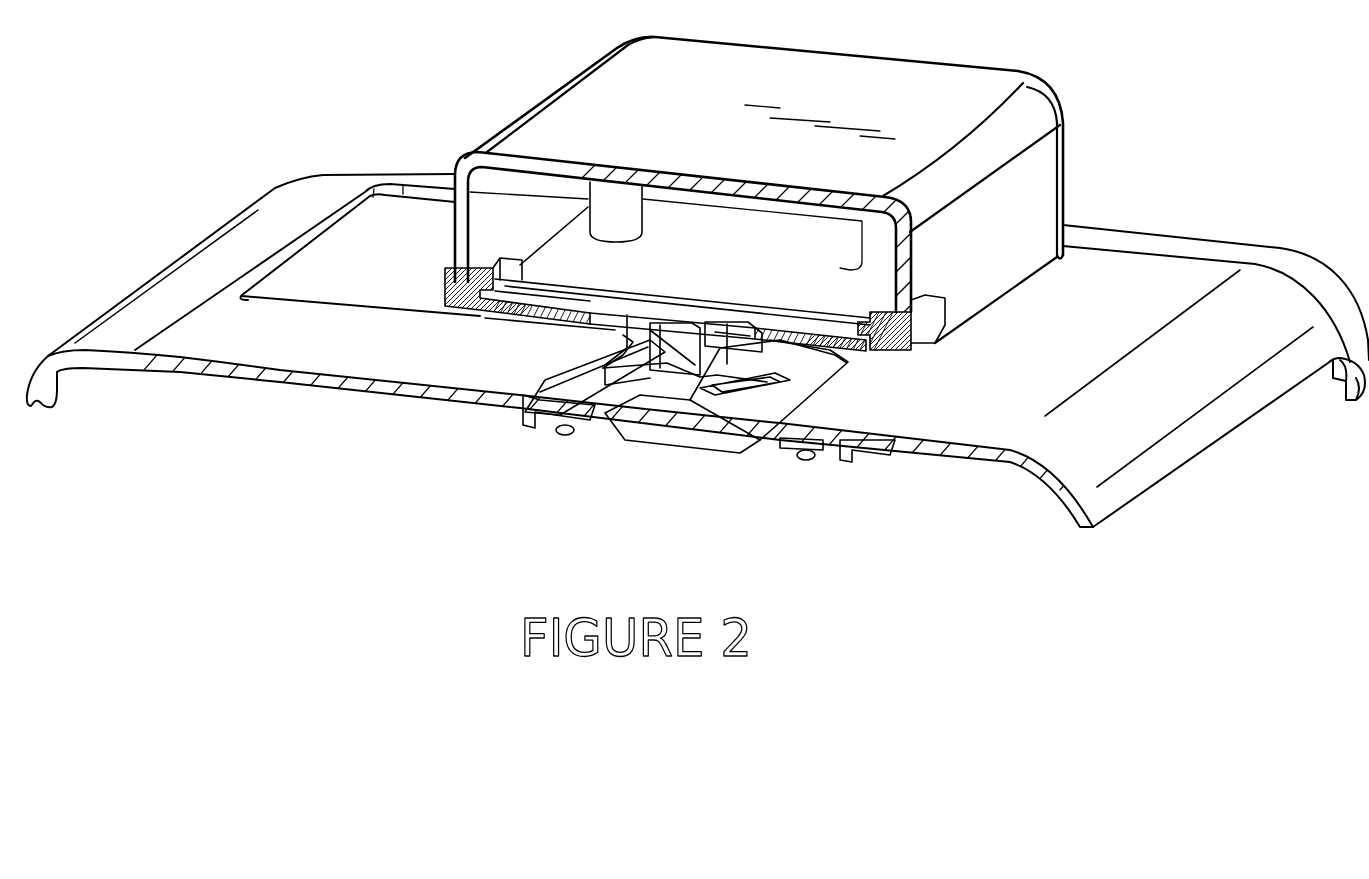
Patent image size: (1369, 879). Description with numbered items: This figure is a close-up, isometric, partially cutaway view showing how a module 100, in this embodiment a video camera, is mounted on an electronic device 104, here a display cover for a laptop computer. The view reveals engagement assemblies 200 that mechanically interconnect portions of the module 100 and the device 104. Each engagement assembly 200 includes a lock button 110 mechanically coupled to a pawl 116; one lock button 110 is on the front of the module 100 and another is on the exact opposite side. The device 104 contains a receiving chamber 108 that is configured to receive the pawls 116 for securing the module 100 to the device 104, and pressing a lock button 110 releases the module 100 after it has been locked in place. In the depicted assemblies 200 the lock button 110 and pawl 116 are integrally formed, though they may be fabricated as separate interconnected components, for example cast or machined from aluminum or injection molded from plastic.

The module 100 is at (1013, 73).
The electronic device 104 is at (1063, 482).
The receiving chamber 108 is at (618, 415).
The lock button 110 is at (445, 286).
The pawl 116 is at (600, 357).
The engagement assembly 200 is at (672, 295).